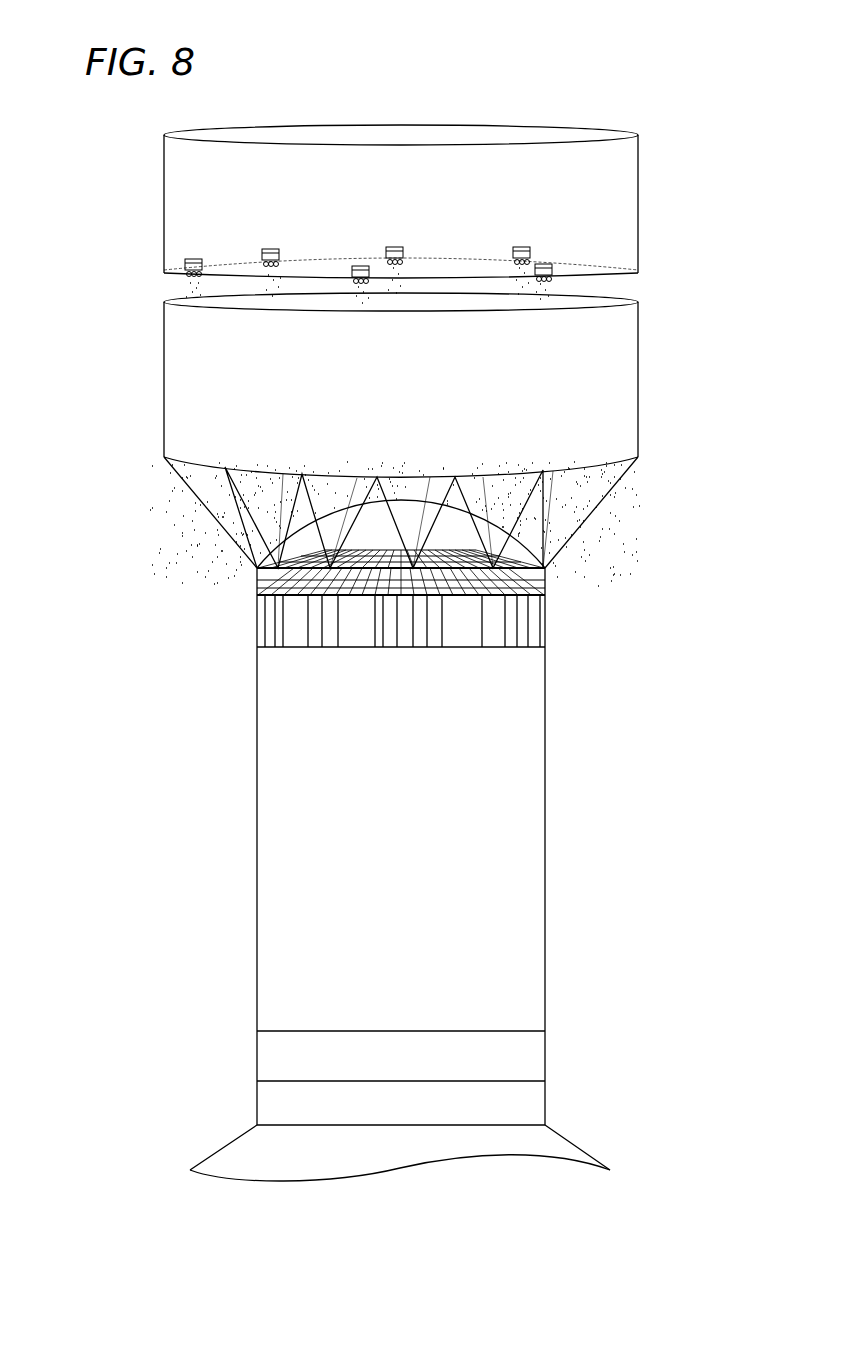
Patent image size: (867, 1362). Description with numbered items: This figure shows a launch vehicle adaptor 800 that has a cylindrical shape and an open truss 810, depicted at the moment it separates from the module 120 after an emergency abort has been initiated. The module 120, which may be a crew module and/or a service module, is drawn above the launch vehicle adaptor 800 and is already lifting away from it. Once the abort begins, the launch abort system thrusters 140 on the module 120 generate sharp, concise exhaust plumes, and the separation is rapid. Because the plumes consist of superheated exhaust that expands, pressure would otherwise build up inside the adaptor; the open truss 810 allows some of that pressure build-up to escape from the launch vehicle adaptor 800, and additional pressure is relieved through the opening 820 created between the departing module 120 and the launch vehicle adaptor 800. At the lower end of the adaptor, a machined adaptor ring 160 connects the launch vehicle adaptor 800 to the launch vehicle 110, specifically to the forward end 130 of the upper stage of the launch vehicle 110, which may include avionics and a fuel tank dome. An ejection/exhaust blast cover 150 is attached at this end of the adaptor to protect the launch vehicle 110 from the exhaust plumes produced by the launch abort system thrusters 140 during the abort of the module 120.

The module 120 is at (717, 135).
The launch vehicle adaptor 800 is at (717, 595).
The launch vehicle 110 is at (717, 600).
The launch abort system thrusters 140 is at (355, 277).
The opening 820 is at (165, 281).
The open truss 810 is at (160, 493).
The ejection/exhaust blast cover 150 is at (268, 537).
The machined adaptor ring 160 is at (238, 588).
The forward end 130 is at (360, 560).